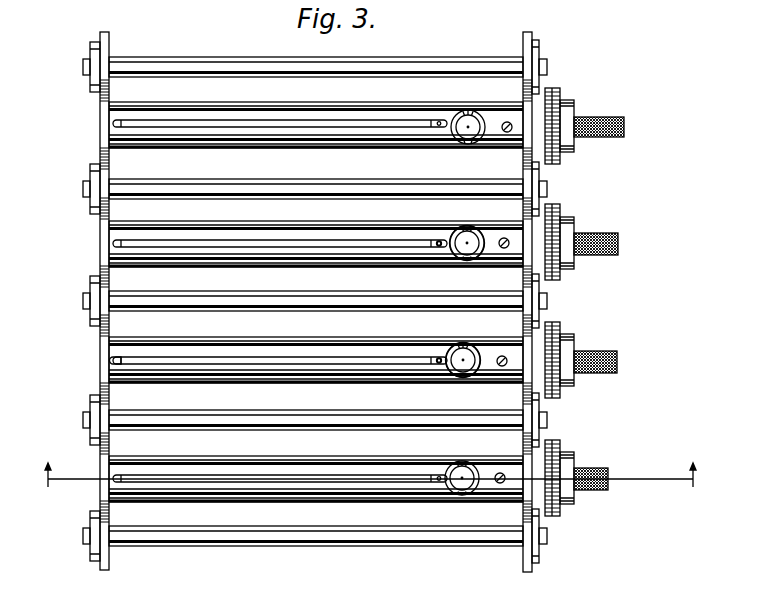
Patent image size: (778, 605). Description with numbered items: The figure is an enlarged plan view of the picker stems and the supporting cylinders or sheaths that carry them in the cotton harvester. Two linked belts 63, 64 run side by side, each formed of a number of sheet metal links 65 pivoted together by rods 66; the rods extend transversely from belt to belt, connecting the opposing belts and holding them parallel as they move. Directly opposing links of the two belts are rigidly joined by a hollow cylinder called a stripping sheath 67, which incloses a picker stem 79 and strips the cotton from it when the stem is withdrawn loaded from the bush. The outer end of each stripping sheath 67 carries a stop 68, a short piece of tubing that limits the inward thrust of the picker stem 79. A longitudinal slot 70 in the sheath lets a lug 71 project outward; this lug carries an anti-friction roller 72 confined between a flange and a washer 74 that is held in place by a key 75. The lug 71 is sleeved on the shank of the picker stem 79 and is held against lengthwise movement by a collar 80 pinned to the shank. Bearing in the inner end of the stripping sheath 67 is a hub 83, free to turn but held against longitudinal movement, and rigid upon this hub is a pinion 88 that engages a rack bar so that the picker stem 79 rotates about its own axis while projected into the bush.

The linked belt 63 is at (97, 267).
The linked belt 64 is at (535, 323).
The sheet metal link 65 is at (95, 323).
The rod 66 is at (310, 297).
The stripping sheath 67 is at (363, 462).
The stop 68 is at (118, 355).
The longitudinal slot 70 is at (288, 245).
The lug 71 is at (477, 228).
The anti-friction roller 72 is at (461, 258).
The washer 74 is at (461, 345).
The key 75 is at (462, 378).
The picker stem 79 is at (609, 137).
The collar 80 is at (437, 250).
The hub 83 is at (572, 340).
The pinion 88 is at (562, 90).